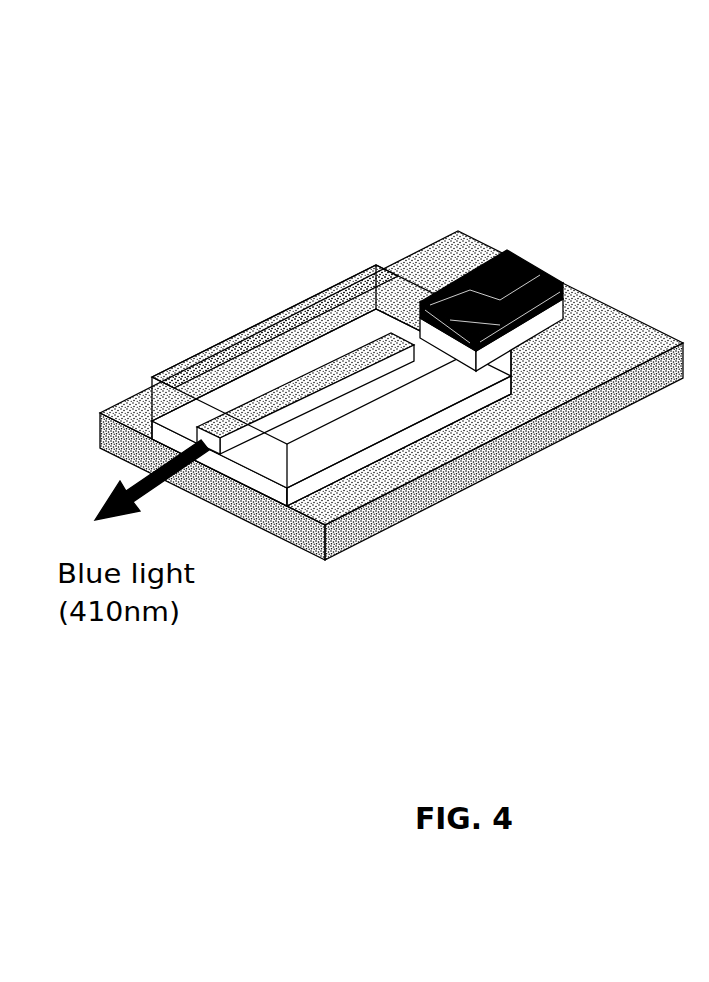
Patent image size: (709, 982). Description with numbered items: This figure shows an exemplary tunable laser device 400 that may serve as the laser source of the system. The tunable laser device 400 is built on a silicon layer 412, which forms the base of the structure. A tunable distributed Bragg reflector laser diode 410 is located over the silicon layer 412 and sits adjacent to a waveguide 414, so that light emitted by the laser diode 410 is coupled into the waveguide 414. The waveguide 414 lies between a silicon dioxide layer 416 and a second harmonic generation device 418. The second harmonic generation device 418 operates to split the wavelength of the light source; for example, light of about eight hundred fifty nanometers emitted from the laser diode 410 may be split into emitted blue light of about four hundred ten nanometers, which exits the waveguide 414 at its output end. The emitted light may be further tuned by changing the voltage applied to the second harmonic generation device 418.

The tunable laser device 400 is at (311, 178).
The tunable distributed Bragg reflector (DBR) laser diode 410 is at (530, 268).
The silicon layer 412 is at (436, 503).
The waveguide 414 is at (350, 354).
The SiO2 layer 416 is at (492, 409).
The second harmonic generation (SHG) device 418 is at (232, 380).